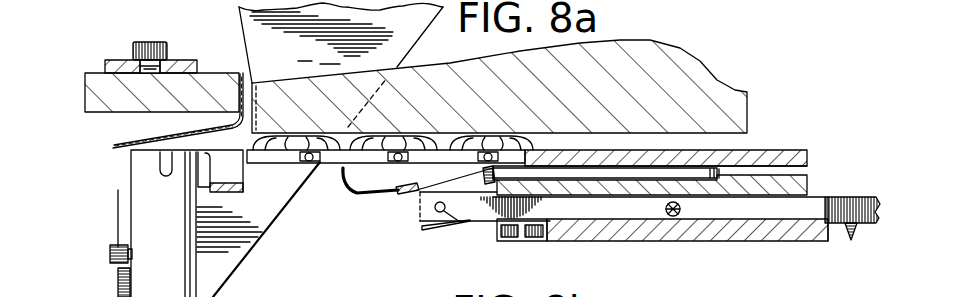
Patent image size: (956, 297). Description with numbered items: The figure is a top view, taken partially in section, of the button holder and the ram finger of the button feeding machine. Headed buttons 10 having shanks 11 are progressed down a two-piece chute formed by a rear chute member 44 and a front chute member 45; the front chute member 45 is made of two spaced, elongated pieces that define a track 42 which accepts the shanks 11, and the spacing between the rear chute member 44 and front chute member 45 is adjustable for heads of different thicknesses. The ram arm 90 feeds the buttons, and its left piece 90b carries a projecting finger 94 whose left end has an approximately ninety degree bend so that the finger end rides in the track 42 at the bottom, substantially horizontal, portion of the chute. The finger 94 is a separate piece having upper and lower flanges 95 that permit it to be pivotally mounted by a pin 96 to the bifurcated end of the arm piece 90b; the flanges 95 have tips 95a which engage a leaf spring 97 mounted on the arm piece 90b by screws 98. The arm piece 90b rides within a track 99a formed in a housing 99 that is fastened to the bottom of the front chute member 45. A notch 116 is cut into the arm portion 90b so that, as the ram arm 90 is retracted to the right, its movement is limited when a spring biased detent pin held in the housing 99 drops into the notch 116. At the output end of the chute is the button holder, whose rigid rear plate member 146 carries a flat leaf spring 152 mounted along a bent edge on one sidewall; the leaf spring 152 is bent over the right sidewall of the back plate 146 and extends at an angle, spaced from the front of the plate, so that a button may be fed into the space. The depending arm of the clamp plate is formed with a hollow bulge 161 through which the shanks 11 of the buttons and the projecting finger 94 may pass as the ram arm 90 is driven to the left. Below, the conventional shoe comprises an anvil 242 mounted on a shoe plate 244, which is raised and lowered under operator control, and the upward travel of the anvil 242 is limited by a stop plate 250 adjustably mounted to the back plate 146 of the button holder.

The headed button 10 is at (283, 151).
The shank 11 is at (314, 165).
The track 42 is at (735, 145).
The rear chute member 44 is at (617, 57).
The front chute member 45 is at (788, 160).
The ram arm 90 is at (851, 241).
The left piece of the ram arm 90b is at (576, 208).
The projecting finger 94 is at (360, 194).
The upper and lower flanges 95 is at (410, 196).
The tips 95a is at (423, 230).
The pin 96 is at (457, 226).
The leaf spring 97 is at (803, 183).
The screws 98 is at (512, 241).
The housing 99 is at (702, 241).
The track 99a is at (633, 208).
The notch 116 is at (682, 210).
The rigid rear plate member 146 is at (97, 92).
The flat leaf spring 152 is at (118, 147).
The hollow bulge 161 is at (232, 187).
The anvil 242 is at (145, 187).
The shoe plate 244 is at (212, 272).
The stop plate 250 is at (117, 60).